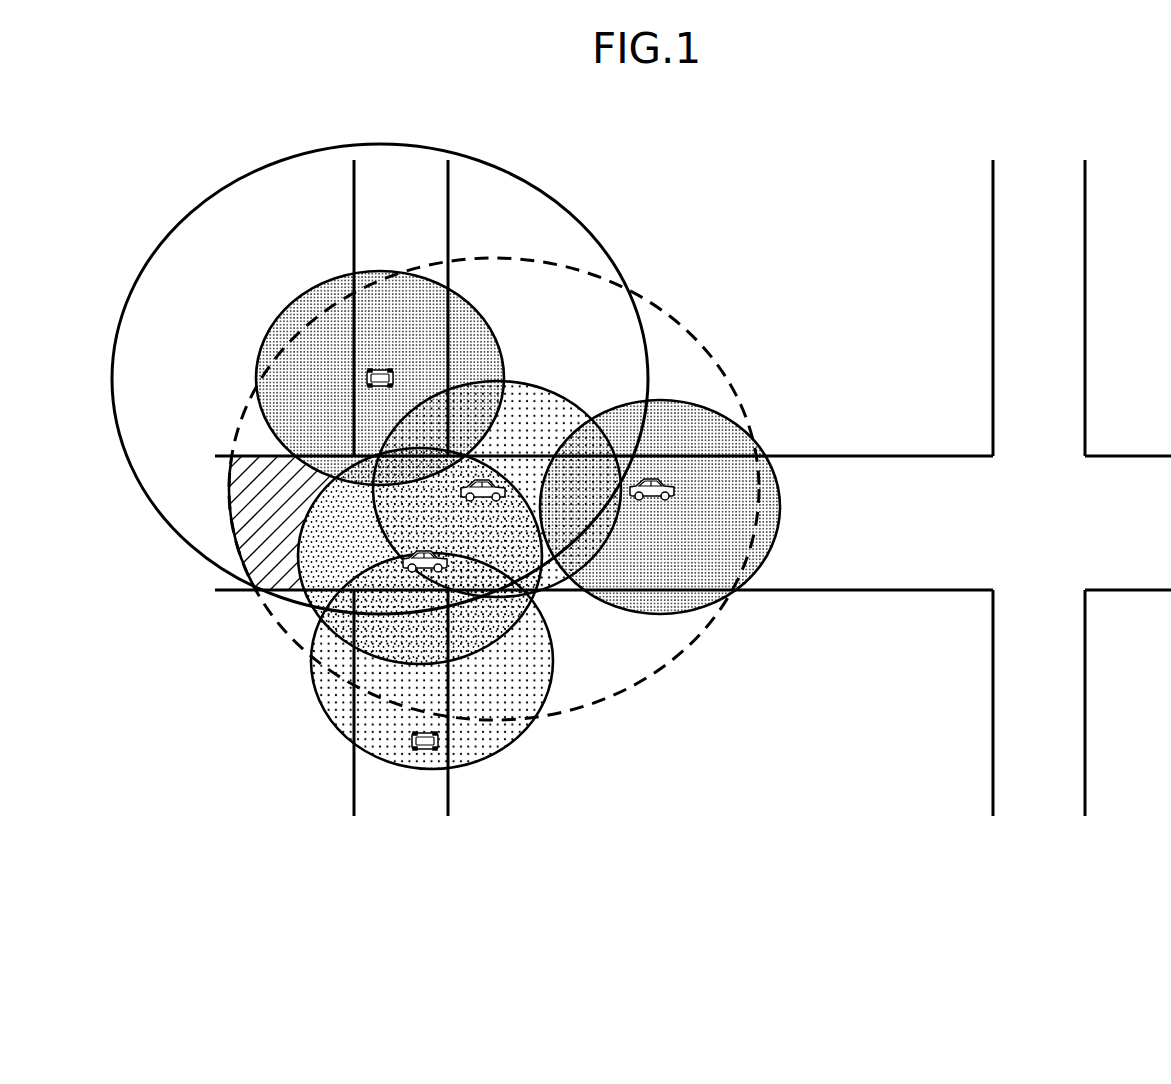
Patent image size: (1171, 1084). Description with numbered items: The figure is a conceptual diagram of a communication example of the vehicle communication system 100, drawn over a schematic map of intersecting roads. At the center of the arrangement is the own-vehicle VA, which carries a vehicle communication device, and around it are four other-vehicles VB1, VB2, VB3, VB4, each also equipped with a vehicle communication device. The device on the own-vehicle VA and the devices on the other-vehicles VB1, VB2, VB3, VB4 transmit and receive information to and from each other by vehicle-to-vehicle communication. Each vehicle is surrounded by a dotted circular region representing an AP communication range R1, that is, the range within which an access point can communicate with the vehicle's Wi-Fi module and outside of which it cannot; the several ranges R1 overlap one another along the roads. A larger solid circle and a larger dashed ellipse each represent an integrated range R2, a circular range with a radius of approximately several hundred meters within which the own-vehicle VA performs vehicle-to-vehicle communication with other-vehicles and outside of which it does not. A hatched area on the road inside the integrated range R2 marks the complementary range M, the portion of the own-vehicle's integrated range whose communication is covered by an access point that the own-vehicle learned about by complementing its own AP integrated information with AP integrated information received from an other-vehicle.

The vehicle communication system 100 is at (592, 142).
The own-vehicle VA is at (482, 481).
The other-vehicle VB1 is at (380, 368).
The other-vehicle VB2 is at (405, 568).
The other-vehicle VB3 is at (428, 752).
The other-vehicle VB4 is at (648, 480).
The AP communication range R1 is at (483, 318).
The integrated range R2 is at (177, 226).
The complementary range M is at (252, 528).